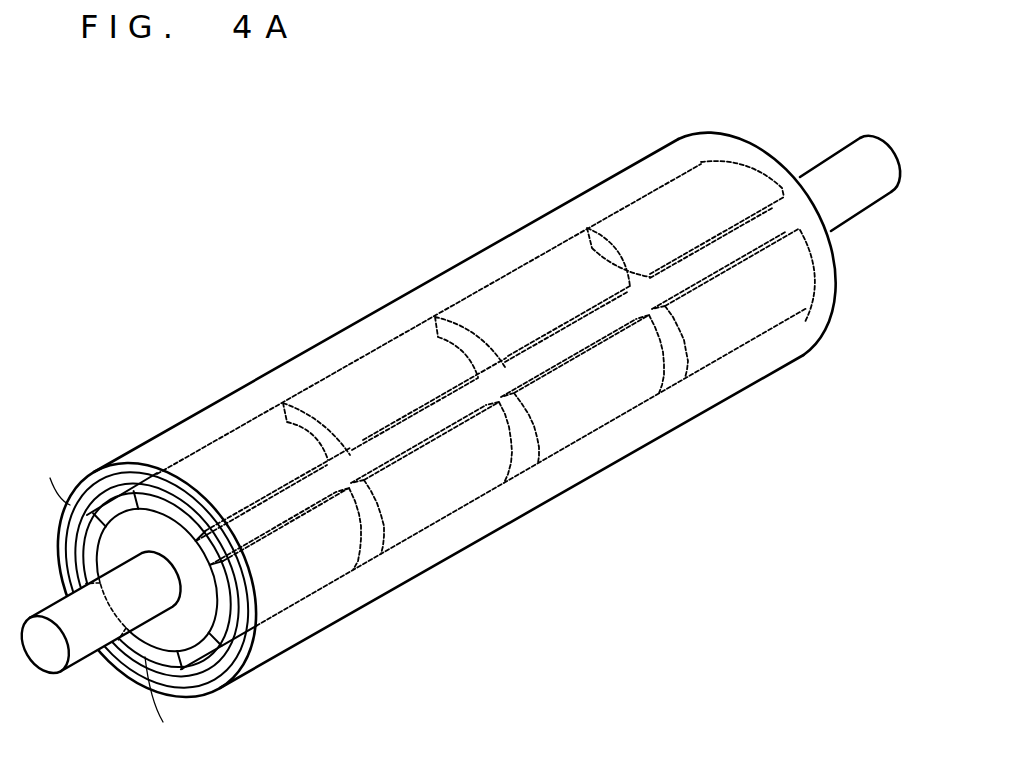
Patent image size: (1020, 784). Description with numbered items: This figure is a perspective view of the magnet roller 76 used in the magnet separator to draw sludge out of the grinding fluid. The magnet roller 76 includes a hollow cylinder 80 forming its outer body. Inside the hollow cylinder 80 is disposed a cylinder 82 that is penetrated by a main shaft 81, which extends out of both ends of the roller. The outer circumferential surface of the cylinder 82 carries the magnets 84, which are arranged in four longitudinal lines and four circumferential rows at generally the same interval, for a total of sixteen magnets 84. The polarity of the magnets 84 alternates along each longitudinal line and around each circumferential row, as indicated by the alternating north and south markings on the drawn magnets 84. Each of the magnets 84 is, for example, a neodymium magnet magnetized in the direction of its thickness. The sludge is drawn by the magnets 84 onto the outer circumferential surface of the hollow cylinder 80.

The magnet roller 76 is at (271, 297).
The hollow cylinder 80 is at (312, 620).
The main shaft 81 is at (68, 612).
The cylinder 82 is at (185, 632).
The magnets 84 is at (227, 450).